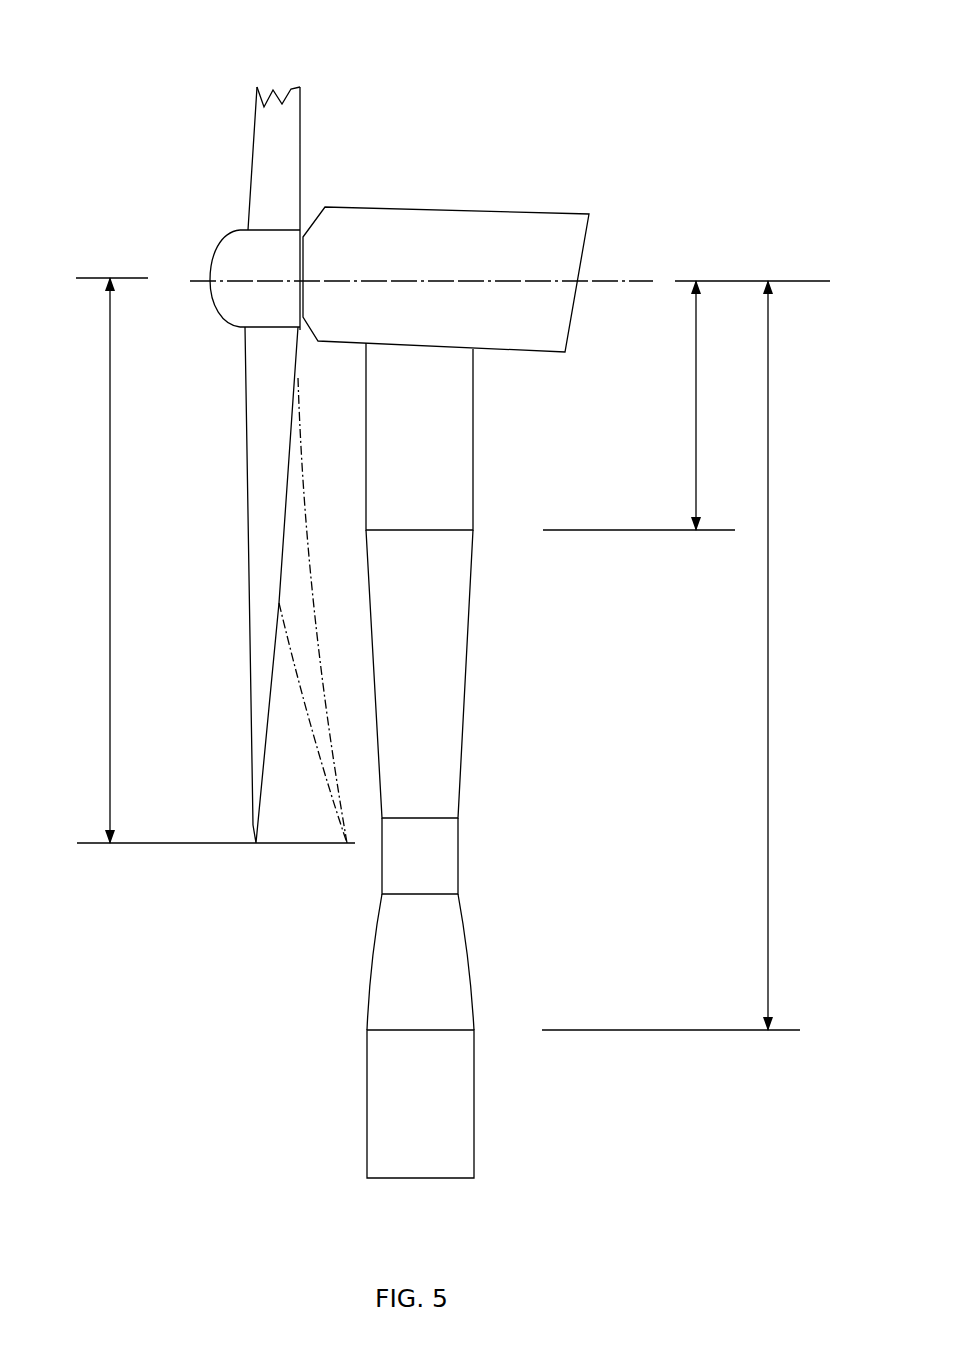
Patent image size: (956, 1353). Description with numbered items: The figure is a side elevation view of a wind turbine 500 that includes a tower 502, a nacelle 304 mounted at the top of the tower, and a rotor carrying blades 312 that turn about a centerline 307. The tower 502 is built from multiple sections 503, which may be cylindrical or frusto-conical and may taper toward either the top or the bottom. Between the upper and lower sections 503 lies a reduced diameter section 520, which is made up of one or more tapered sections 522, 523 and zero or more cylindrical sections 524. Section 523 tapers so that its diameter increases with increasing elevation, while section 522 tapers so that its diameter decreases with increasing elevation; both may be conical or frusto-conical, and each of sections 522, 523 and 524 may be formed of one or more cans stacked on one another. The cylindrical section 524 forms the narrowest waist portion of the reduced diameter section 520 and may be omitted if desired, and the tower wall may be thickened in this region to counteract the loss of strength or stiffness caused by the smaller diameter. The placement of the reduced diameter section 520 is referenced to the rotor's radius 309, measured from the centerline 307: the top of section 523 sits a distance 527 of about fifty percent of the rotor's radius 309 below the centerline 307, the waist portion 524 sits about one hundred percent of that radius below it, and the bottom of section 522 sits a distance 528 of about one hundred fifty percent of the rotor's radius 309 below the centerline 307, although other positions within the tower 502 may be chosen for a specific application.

The wind turbine 500 is at (660, 75).
The blades 312 is at (252, 158).
The nacelle 304 is at (457, 207).
The centerline 307 is at (628, 281).
The sections 503 is at (475, 447).
The tapered section 523 is at (475, 641).
The cylindrical section 524 is at (458, 855).
The tapered section 522 is at (466, 970).
The reduced diameter section 520 is at (328, 940).
The rotor's radius 309 is at (110, 561).
The distance 527 is at (696, 402).
The distance 528 is at (766, 746).
The tower 502 is at (725, 1075).